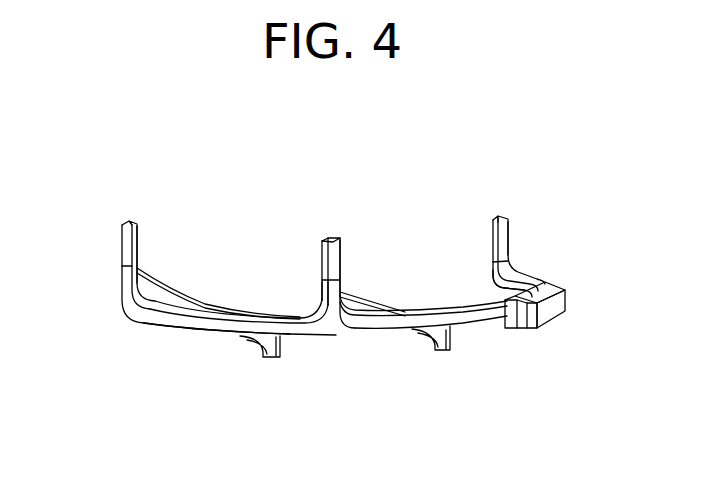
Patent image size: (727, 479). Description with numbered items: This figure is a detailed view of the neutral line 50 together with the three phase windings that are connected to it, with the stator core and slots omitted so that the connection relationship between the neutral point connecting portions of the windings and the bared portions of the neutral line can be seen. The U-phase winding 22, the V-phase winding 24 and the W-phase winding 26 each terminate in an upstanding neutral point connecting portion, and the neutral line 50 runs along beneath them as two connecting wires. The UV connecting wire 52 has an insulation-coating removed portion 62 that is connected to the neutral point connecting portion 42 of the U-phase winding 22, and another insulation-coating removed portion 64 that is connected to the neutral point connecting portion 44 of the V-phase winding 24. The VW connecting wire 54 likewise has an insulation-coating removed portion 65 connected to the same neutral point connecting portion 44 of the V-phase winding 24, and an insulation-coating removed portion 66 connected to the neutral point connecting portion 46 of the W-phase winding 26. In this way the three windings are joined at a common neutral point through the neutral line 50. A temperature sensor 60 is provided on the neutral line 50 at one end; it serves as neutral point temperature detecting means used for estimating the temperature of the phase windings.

The neutral line 50 is at (122, 338).
The insulation-coating removed portion 66 is at (122, 250).
The neutral point connecting portion 46 is at (141, 240).
The W-phase winding 26 is at (167, 297).
The VW connecting wire 54 is at (174, 324).
The neutral point connecting portion 44 is at (320, 257).
The insulation-coating removed portion 65 is at (320, 292).
The insulation-coating removed portion 64 is at (341, 257).
The V-phase winding 24 is at (368, 308).
The UV connecting wire 52 is at (378, 324).
The neutral point connecting portion 42 is at (490, 233).
The insulation-coating removed portion 62 is at (509, 238).
The U-phase winding 22 is at (493, 280).
The temperature sensor 60 is at (552, 312).